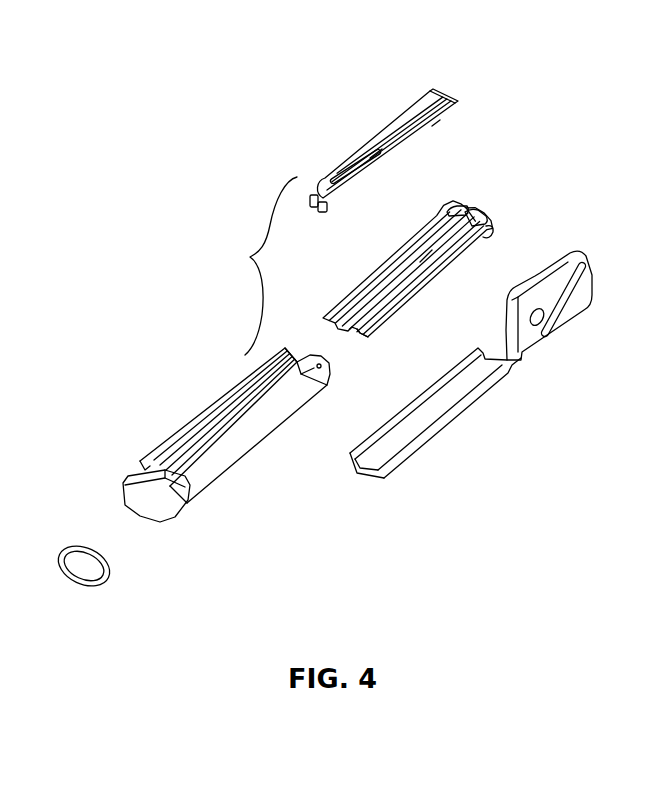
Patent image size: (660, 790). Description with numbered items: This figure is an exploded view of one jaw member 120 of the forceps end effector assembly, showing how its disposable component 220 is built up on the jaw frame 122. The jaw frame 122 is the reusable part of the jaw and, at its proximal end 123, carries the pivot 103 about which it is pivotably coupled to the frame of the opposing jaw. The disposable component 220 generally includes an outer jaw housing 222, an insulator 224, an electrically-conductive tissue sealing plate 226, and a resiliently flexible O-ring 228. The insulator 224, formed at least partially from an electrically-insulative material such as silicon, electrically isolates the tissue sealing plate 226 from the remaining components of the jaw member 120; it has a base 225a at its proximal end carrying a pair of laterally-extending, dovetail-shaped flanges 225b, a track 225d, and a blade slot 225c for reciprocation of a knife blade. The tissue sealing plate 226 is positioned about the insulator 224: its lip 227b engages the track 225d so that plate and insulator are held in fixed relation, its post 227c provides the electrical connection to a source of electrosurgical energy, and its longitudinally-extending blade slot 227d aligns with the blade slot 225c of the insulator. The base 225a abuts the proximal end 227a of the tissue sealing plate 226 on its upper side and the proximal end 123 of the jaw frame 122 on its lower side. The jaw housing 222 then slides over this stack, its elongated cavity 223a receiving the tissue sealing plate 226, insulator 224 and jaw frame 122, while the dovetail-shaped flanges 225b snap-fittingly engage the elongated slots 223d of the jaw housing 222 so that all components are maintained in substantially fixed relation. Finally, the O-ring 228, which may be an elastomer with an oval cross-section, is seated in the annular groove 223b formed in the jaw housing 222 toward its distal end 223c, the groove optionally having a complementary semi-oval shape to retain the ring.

The jaw member 120 is at (210, 167).
The disposable component 220 is at (245, 266).
The tissue sealing plate 226 is at (380, 134).
The proximal end 227a is at (428, 92).
The lip 227b is at (436, 125).
The post 227c is at (315, 209).
The blade slot 227d is at (377, 153).
The insulator 224 is at (392, 304).
The base 225a is at (474, 220).
The dovetail-shaped flanges 225b is at (442, 207).
The blade slot 225c is at (431, 257).
The track 225d is at (365, 338).
The jaw housing 222 is at (207, 475).
The elongated cavity 223a is at (302, 350).
The annular groove 223b is at (193, 507).
The distal end 223c is at (128, 482).
The elongated slots 223d is at (307, 384).
The O-ring 228 is at (102, 585).
The jaw frame 122 is at (437, 427).
The proximal end 123 is at (516, 355).
The pivot 103 is at (545, 318).